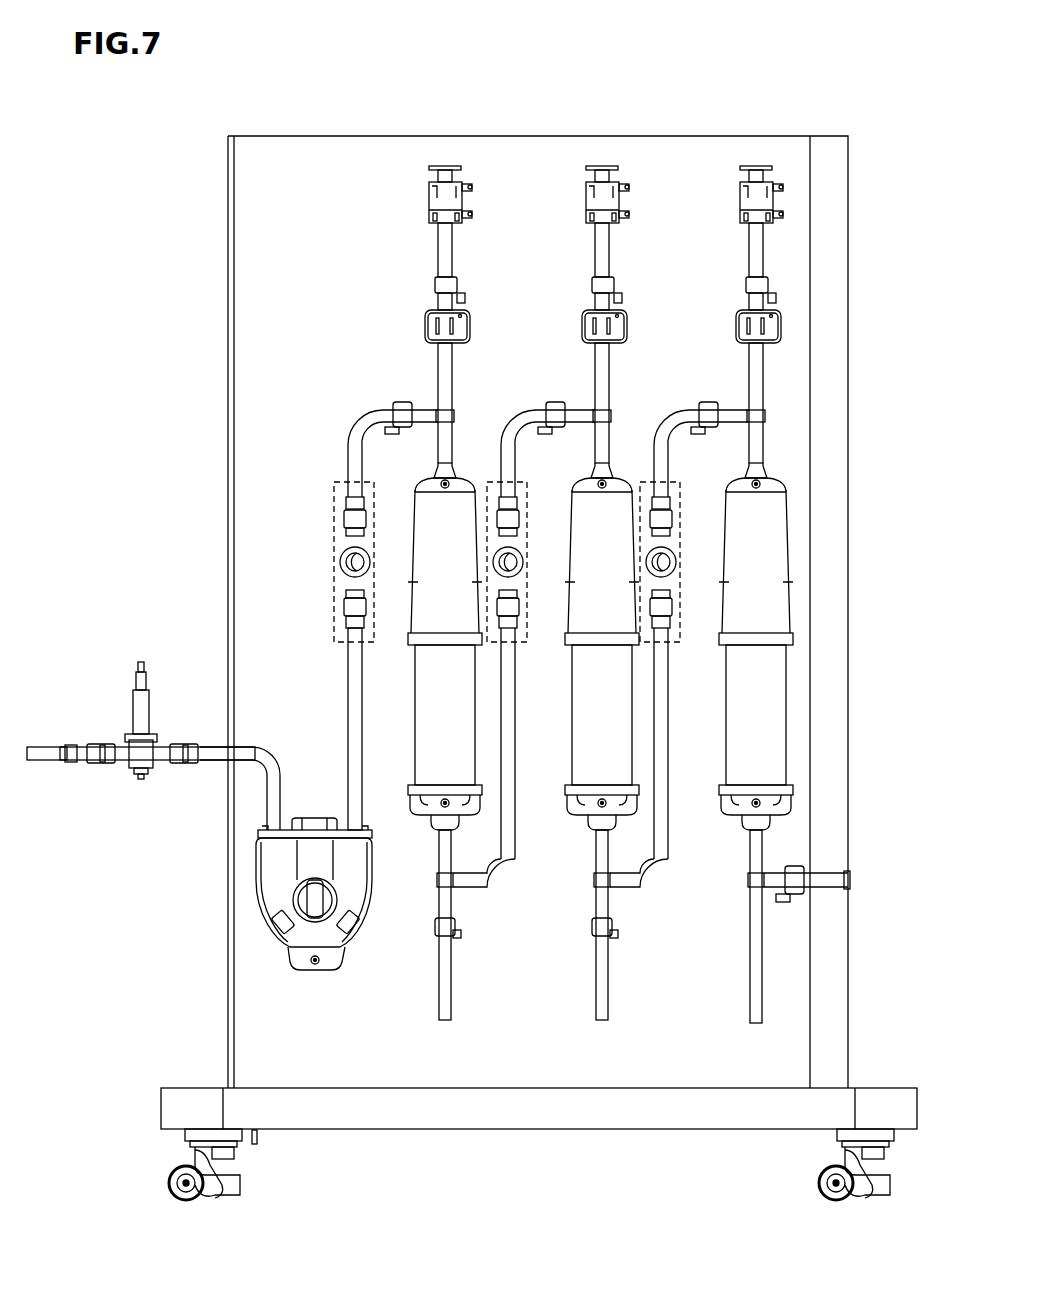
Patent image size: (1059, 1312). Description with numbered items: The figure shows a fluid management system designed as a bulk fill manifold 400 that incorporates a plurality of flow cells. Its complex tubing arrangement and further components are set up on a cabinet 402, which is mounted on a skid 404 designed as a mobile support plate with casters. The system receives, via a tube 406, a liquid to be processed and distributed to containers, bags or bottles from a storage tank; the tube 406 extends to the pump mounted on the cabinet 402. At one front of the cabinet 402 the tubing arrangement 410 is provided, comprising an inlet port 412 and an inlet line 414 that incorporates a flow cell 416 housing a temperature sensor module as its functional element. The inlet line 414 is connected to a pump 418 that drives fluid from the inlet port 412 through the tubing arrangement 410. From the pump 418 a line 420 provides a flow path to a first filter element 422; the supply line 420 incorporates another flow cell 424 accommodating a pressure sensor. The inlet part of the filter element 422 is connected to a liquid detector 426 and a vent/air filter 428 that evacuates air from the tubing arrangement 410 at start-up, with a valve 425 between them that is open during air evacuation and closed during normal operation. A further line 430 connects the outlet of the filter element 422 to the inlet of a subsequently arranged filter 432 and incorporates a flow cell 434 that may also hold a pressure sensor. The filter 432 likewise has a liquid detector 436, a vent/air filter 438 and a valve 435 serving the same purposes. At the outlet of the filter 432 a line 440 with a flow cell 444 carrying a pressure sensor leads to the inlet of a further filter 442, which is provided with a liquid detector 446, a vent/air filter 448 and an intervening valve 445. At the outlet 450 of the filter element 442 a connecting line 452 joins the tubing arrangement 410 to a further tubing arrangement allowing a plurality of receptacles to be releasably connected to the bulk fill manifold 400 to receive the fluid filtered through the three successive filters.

The bulk fill manifold 400 is at (690, 112).
The cabinet 402 is at (205, 469).
The skid 404 is at (480, 1143).
The tube 406 is at (50, 762).
The tubing arrangement 410 is at (338, 393).
The inlet port 412 is at (27, 748).
The inlet line 414 is at (280, 766).
The flow cell 416 is at (145, 802).
The pump 418 is at (315, 974).
The line 420 is at (347, 681).
The first filter element 422 is at (435, 724).
The flow cell 424 is at (343, 556).
The valve 425 is at (435, 285).
The liquid detector 426 is at (425, 326).
The vent/air filter 428 is at (429, 193).
The line 430 is at (498, 883).
The filter 432 is at (590, 724).
The flow cell 434 is at (520, 556).
The valve 435 is at (592, 285).
The liquid detector 436 is at (582, 326).
The vent/air filter 438 is at (586, 193).
The line 440 is at (645, 883).
The filter 442 is at (746, 736).
The flow cell 444 is at (673, 556).
The valve 445 is at (746, 285).
The liquid detector 446 is at (736, 326).
The vent/air filter 448 is at (740, 193).
The outlet 450 is at (745, 838).
The connecting line 452 is at (826, 882).